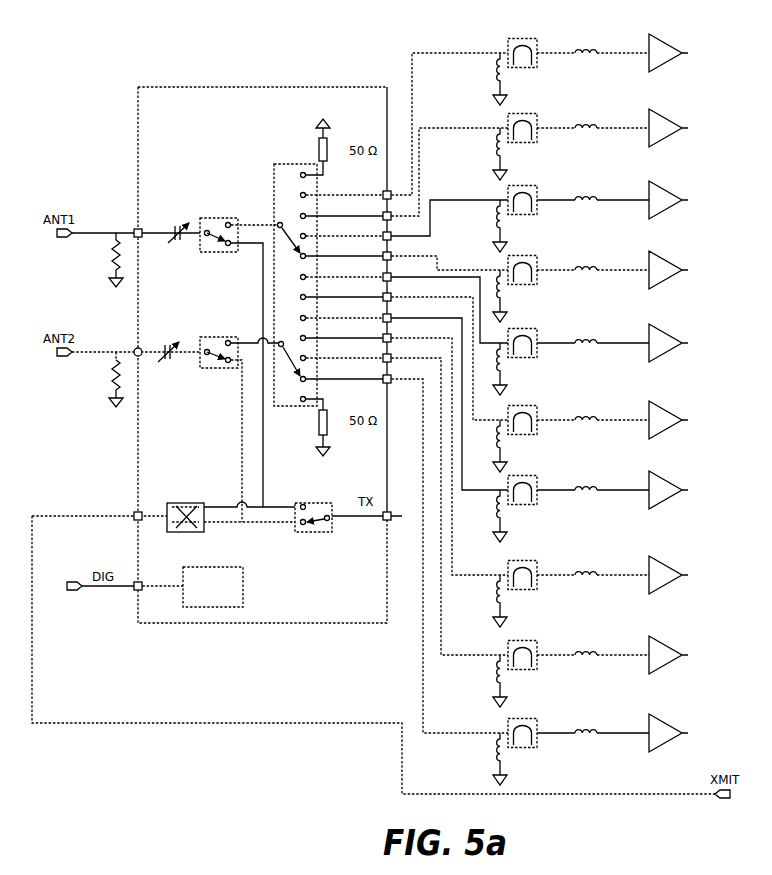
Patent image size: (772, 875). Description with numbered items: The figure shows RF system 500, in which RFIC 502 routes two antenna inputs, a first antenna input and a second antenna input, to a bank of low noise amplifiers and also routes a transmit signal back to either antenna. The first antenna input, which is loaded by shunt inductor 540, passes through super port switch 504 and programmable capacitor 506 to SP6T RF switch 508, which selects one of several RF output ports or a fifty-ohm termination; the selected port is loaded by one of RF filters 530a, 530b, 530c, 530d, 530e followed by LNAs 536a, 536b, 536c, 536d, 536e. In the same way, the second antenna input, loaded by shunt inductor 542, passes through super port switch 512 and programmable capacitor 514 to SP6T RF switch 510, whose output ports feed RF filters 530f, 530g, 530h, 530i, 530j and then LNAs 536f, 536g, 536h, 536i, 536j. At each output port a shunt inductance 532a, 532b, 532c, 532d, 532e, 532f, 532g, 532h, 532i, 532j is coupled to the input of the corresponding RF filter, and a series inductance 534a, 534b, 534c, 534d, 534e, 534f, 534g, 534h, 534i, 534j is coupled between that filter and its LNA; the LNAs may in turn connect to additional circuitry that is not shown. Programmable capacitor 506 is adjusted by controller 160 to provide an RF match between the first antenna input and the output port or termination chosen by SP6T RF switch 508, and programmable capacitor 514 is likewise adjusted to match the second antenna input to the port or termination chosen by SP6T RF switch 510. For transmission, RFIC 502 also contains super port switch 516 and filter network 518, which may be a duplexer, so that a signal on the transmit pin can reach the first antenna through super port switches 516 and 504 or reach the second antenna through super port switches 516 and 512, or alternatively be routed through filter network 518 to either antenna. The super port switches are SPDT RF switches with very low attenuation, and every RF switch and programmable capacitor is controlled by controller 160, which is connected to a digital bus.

The RF system 500 is at (86, 74).
The RFIC 502 is at (281, 87).
The super port switch 504 is at (228, 218).
The programmable capacitor 506 is at (176, 227).
The SP6T RF switch 508 is at (275, 164).
The SP6T RF switch 510 is at (311, 387).
The super port switch 512 is at (231, 337).
The programmable capacitor 514 is at (167, 342).
The super port switch 516 is at (318, 503).
The filter network 518 is at (182, 503).
The controller 160 is at (206, 567).
The shunt inductor 540 is at (79, 275).
The shunt inductor 542 is at (83, 390).
The RF filter 530a is at (508, 40).
The RF filter 530b is at (510, 114).
The RF filter 530c is at (510, 186).
The RF filter 530d is at (510, 256).
The RF filter 530e is at (538, 353).
The RF filter 530f is at (538, 430).
The RF filter 530g is at (538, 500).
The RF filter 530h is at (538, 585).
The RF filter 530i is at (538, 665).
The RF filter 530j is at (538, 743).
The shunt inductance 532a is at (496, 77).
The shunt inductance 532b is at (496, 152).
The shunt inductance 532c is at (496, 224).
The shunt inductance 532d is at (503, 298).
The shunt inductance 532e is at (503, 372).
The shunt inductance 532f is at (503, 449).
The shunt inductance 532g is at (503, 519).
The shunt inductance 532h is at (503, 604).
The shunt inductance 532i is at (503, 684).
The shunt inductance 532j is at (503, 762).
The series inductance 534a is at (588, 48).
The series inductance 534b is at (588, 123).
The series inductance 534c is at (588, 195).
The series inductance 534d is at (582, 262).
The series inductance 534e is at (582, 335).
The series inductance 534f is at (582, 412).
The series inductance 534g is at (582, 482).
The series inductance 534h is at (582, 567).
The series inductance 534i is at (582, 647).
The series inductance 534j is at (582, 725).
The LNA 536a is at (660, 41).
The LNA 536b is at (660, 116).
The LNA 536c is at (660, 188).
The LNA 536d is at (660, 258).
The LNA 536e is at (660, 331).
The LNA 536f is at (660, 408).
The LNA 536g is at (660, 478).
The LNA 536h is at (660, 563).
The LNA 536i is at (660, 643).
The LNA 536j is at (660, 721).